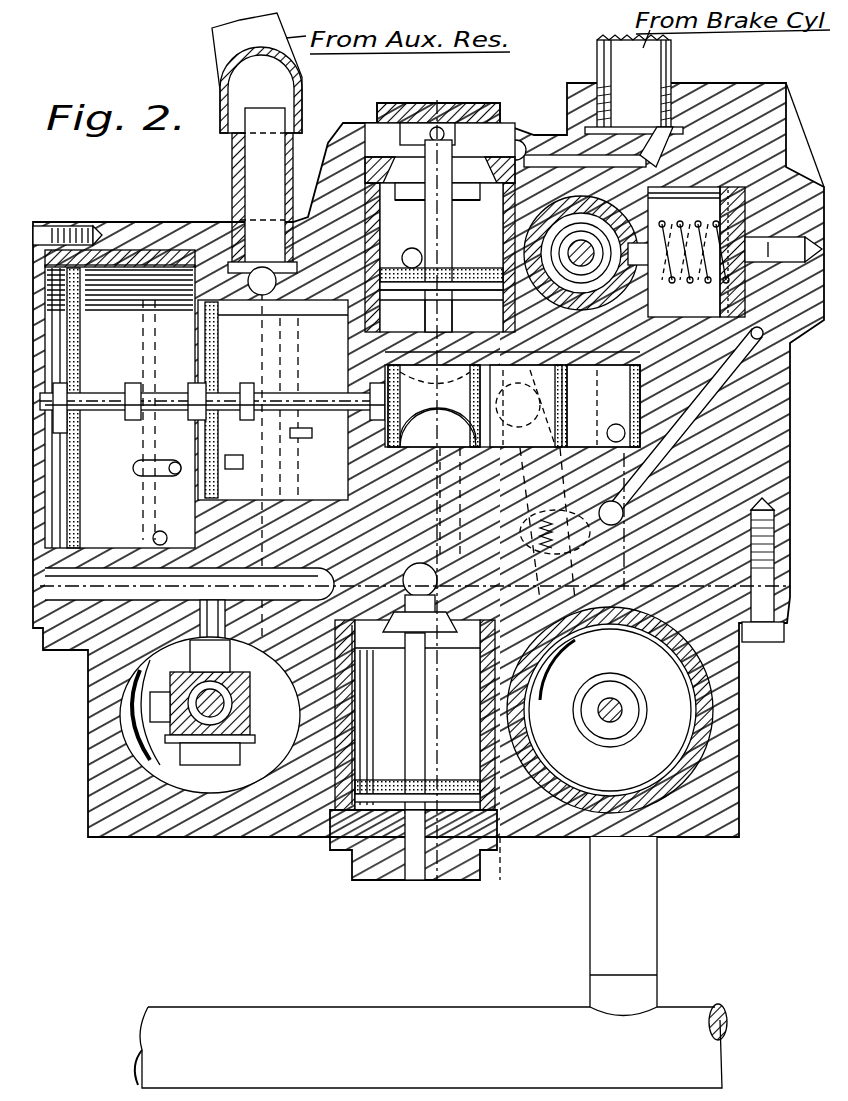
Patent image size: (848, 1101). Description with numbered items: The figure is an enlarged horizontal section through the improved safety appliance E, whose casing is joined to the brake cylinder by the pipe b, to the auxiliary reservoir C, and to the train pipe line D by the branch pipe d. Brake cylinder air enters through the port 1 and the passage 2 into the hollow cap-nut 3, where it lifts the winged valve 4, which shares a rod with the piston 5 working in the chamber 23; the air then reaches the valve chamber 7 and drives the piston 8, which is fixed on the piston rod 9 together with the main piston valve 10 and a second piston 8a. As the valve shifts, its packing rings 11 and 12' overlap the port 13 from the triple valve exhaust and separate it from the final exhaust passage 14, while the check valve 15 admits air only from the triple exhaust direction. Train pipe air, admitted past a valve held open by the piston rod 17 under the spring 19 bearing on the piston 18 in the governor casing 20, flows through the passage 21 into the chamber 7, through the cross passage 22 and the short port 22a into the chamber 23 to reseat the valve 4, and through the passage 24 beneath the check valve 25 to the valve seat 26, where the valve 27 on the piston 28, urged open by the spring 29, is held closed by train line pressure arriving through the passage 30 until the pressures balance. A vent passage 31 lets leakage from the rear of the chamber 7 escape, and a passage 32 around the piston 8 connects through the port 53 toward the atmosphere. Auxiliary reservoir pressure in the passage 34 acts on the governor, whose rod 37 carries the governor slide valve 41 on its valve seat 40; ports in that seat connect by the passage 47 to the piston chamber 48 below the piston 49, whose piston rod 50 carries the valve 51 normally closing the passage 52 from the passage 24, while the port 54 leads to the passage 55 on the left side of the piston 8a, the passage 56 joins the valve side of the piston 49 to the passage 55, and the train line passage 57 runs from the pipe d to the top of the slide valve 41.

The port 1 is at (663, 150).
The passage 2 is at (553, 165).
The hollow cap-nut 3 is at (428, 125).
The winged valve 4 is at (415, 188).
The piston 5 is at (408, 252).
The valve chamber 7 is at (420, 437).
The piston 8 is at (210, 360).
The piston 8a is at (88, 352).
The piston rod or valve stem 9 is at (322, 392).
The piston valve 10 is at (312, 435).
The packing ring 11 is at (590, 398).
The packing ring 12' is at (502, 524).
The port 13 is at (570, 424).
The passage 14 is at (470, 408).
The check valve 15 is at (625, 527).
The piston rod 17 is at (620, 702).
The piston 18 is at (610, 710).
The spring 19 is at (575, 718).
The governor casing 20 is at (728, 820).
The passage 21 is at (604, 612).
The cross passage 22 is at (500, 286).
The short port 22a is at (441, 320).
The chamber 23 is at (440, 290).
The passage 24 is at (648, 300).
The check valve 25 is at (566, 246).
The valve seat 26 is at (655, 240).
The valve 27 is at (694, 252).
The piston 28 is at (771, 252).
The spring 29 is at (742, 188).
The passage 30 is at (700, 390).
The vent passage 31 is at (645, 470).
The passage 32 is at (240, 462).
The passage 34 is at (235, 290).
The rod 37 is at (210, 715).
The valve seat 40 is at (149, 706).
The governor slide valve 41 is at (236, 706).
The passage 47 is at (338, 838).
The piston chamber 48 is at (480, 782).
The piston 49 is at (405, 672).
The piston rod 50 is at (400, 708).
The valve 51 is at (440, 632).
The passage 52 is at (418, 575).
The port 53 is at (165, 485).
The port 54 is at (230, 583).
The passage 55 is at (189, 585).
The passage 56 is at (375, 715).
The train line passage 57 is at (522, 840).
The auxiliary reservoir C is at (222, 45).
The pipe b is at (600, 60).
The branch pipe d is at (588, 944).
The train pipe line D is at (296, 1020).
The safety appliance E is at (178, 838).